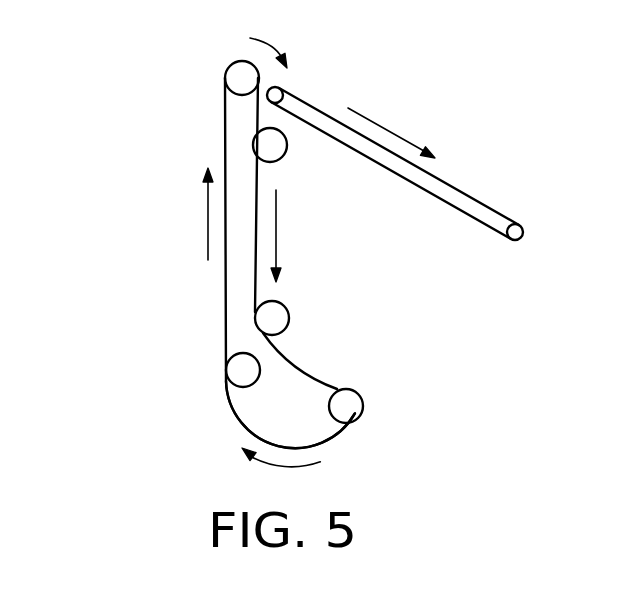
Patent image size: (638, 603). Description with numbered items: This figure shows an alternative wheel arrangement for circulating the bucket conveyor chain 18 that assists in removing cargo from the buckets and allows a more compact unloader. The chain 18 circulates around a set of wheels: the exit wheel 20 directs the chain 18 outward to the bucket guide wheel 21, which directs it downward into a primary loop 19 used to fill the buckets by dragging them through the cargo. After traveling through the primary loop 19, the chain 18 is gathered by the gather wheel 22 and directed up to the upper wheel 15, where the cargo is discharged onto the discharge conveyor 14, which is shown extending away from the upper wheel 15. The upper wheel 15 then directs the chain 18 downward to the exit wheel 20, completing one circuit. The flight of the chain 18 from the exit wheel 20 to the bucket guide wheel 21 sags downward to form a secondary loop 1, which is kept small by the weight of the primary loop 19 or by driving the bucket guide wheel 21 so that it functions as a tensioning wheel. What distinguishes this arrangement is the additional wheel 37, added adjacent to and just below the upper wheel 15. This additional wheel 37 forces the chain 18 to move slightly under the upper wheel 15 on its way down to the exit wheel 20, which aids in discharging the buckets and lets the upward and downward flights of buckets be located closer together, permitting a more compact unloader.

The secondary loop 1 is at (305, 372).
The discharge conveyor 14 is at (320, 110).
The upper wheel 15 is at (225, 78).
The bucket conveyor chain 18 is at (226, 322).
The primary loop 19 is at (334, 438).
The exit wheel 20 is at (285, 310).
The bucket guide wheel 21 is at (363, 403).
The gather wheel 22 is at (226, 377).
The additional wheel 37 is at (282, 158).